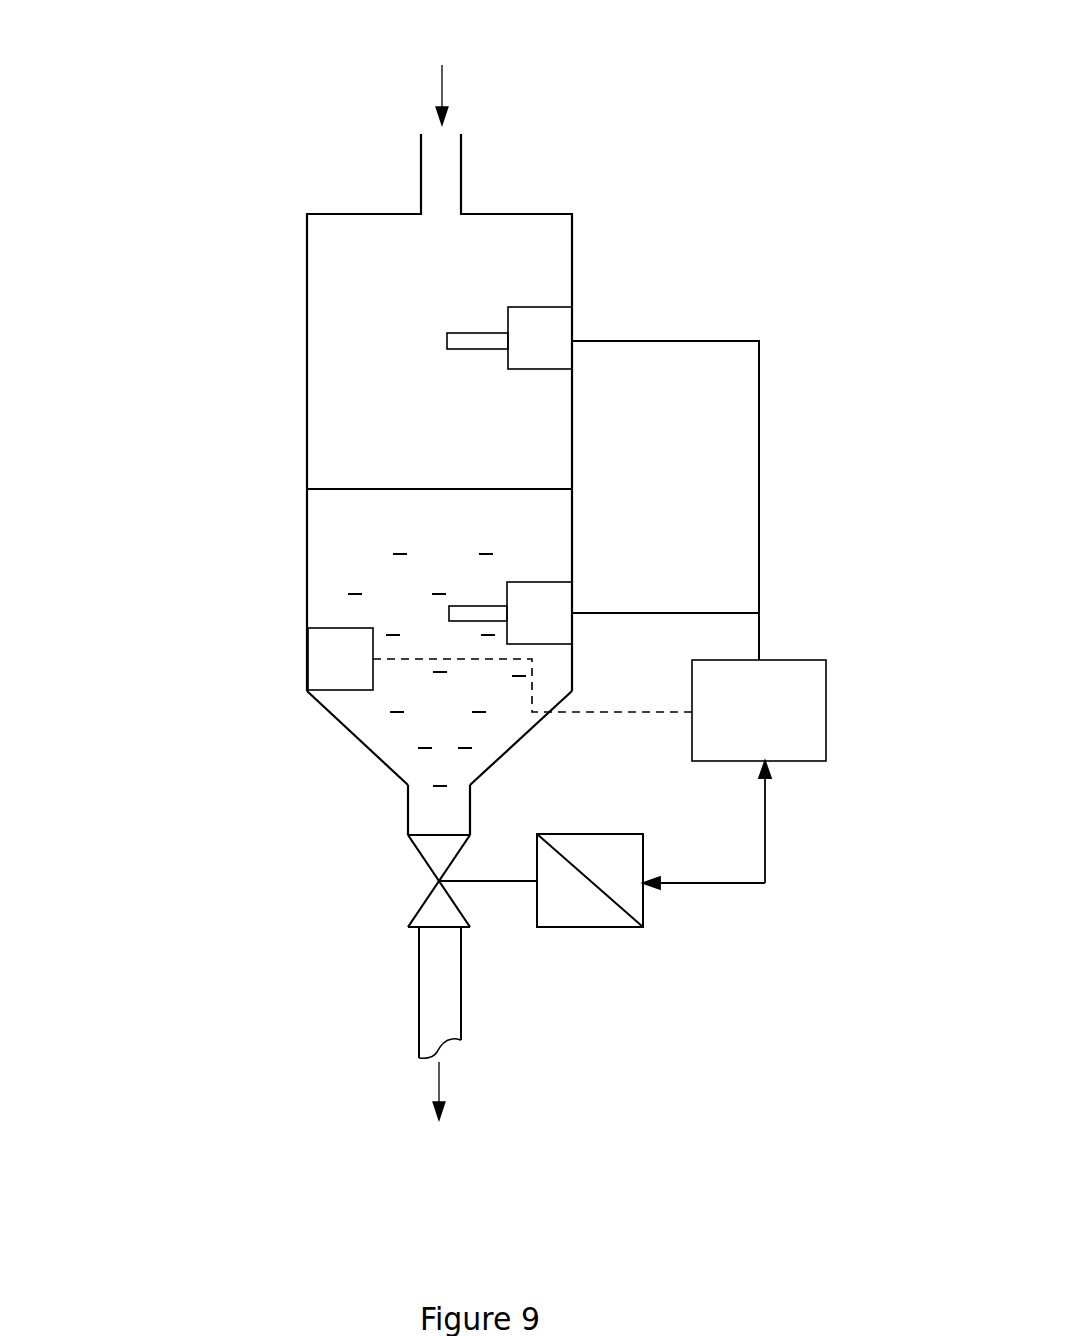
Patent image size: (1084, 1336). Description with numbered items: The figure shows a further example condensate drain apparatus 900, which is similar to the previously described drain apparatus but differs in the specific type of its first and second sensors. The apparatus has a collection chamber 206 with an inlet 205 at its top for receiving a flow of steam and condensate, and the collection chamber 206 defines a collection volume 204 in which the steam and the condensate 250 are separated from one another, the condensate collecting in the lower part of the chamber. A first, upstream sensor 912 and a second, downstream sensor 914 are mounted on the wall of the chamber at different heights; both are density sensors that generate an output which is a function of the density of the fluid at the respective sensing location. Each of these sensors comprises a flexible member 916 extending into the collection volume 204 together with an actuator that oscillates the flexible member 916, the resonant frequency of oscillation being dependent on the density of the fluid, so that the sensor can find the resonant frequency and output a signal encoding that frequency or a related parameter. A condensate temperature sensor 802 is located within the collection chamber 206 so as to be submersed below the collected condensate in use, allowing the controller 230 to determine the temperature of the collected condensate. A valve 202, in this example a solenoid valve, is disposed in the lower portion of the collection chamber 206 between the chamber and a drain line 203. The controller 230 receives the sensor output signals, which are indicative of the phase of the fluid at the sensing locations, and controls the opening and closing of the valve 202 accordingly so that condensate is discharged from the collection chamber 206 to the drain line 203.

The condensate drain apparatus 900 is at (788, 23).
The inlet 205 is at (425, 168).
The flexible member 916 is at (490, 335).
The first sensor 912 is at (560, 318).
The collection volume 204 is at (377, 333).
The collection chamber 206 is at (572, 457).
The condensate 250 is at (327, 586).
The second sensor 914 is at (546, 592).
The condensate temperature sensor 802 is at (325, 661).
The controller 230 is at (826, 692).
The valve 202 is at (432, 857).
The drain line 203 is at (430, 1000).